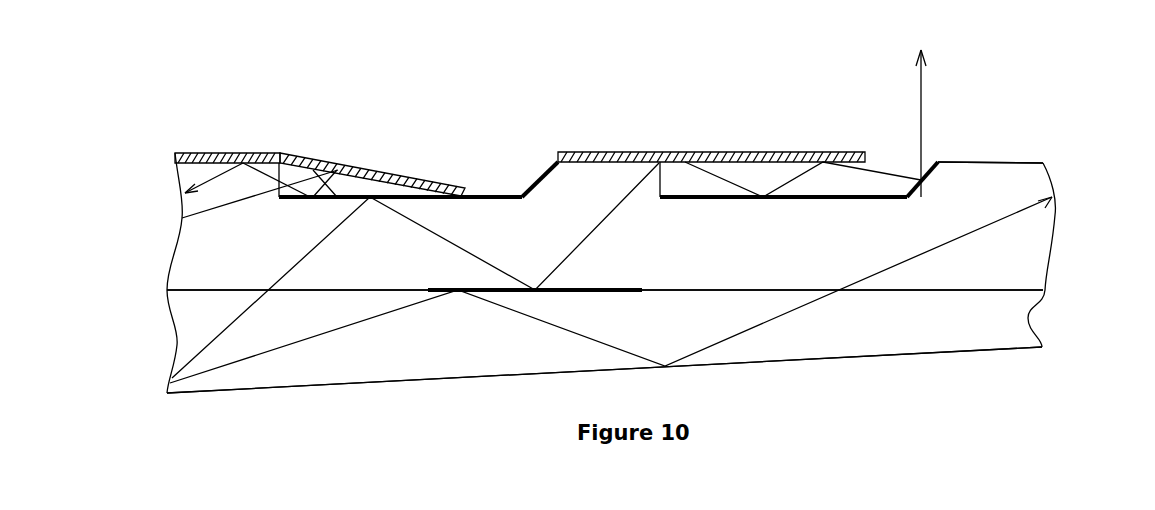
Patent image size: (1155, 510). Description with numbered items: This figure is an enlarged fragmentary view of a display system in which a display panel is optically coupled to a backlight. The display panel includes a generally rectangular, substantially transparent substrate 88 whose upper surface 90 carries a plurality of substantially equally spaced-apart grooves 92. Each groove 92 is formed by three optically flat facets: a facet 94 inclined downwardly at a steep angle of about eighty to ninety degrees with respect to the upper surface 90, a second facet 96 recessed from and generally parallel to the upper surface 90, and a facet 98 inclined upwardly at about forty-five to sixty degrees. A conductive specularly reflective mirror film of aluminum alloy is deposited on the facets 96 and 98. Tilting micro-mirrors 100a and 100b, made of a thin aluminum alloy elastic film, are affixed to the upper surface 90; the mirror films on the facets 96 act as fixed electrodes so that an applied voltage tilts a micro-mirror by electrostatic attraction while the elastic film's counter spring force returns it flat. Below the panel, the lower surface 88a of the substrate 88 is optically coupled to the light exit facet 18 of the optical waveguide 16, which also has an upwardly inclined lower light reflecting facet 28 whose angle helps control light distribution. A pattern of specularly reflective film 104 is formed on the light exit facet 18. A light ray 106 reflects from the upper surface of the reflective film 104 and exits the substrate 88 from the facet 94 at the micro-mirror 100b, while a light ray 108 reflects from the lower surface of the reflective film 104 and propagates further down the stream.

The optical waveguide 16 is at (967, 320).
The light exit facet 18 is at (892, 291).
The upwardly inclined lower light reflecting facet 28 is at (798, 363).
The substrate 88 is at (965, 205).
The lower surface 88a is at (970, 290).
The upper surface 90 is at (985, 163).
The groove 92 is at (757, 173).
The optically flat facet 94 is at (265, 162).
The second facet 96 is at (485, 196).
The facet 98 is at (538, 180).
The tilting micro-mirror 100a is at (365, 170).
The tilting micro-mirror 100b is at (708, 152).
The specularly reflective film 104 is at (572, 292).
The light ray 106 is at (921, 93).
The light ray 108 is at (242, 362).